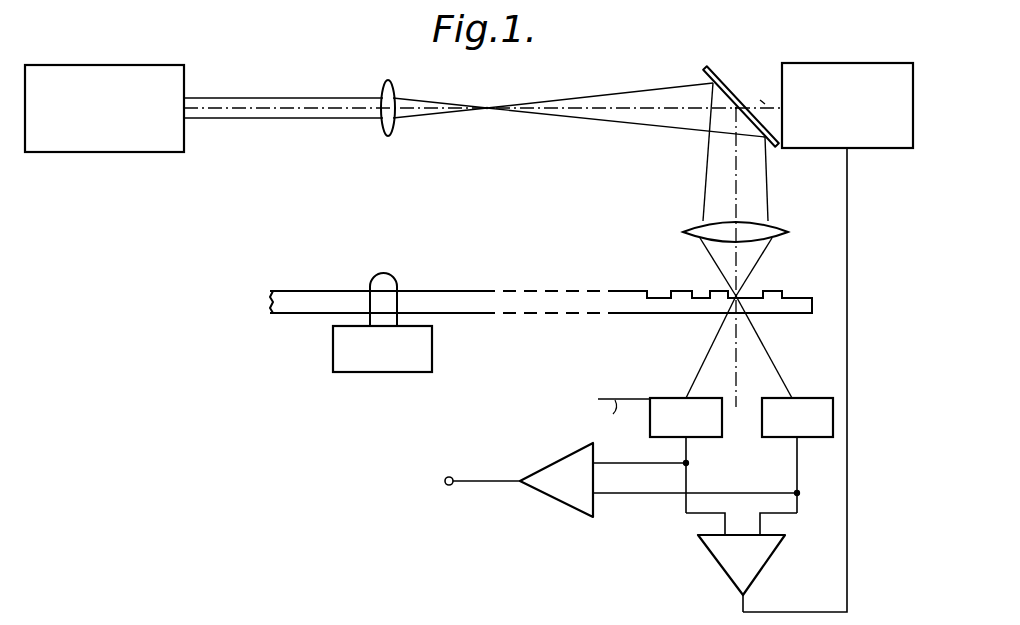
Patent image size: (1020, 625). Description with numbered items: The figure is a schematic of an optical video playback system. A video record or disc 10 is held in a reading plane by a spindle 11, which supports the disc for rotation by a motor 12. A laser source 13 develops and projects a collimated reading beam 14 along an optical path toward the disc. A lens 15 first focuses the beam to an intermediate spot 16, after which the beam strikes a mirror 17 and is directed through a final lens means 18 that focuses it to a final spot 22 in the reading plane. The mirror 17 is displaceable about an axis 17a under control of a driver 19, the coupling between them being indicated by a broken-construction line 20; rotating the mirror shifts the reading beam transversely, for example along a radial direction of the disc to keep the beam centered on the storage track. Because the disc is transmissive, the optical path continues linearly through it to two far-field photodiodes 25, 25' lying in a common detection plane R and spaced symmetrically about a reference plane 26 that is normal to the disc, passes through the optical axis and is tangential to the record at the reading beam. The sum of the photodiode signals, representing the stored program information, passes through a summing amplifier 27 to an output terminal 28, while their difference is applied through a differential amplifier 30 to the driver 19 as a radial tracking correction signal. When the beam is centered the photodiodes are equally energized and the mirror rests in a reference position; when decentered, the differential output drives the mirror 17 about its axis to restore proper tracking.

The video record or disc 10 is at (627, 291).
The spindle 11 is at (398, 283).
The motor 12 is at (333, 347).
The laser source 13 is at (142, 75).
The reading beam 14 is at (300, 97).
The lens 15 is at (392, 90).
The intermediate spot 16 is at (490, 106).
The mirror 17 is at (702, 76).
The mirror axis 17a is at (735, 109).
The final lens means 18 is at (785, 233).
The driver 19 is at (832, 79).
The broken-construction line 20 is at (763, 102).
The final spot 22 is at (742, 292).
The photodiode 25 is at (659, 440).
The photodiode 25' is at (797, 436).
The reference plane 26 is at (737, 386).
The summing amplifier 27 is at (559, 461).
The output terminal 28 is at (445, 477).
The differential amplifier 30 is at (726, 567).